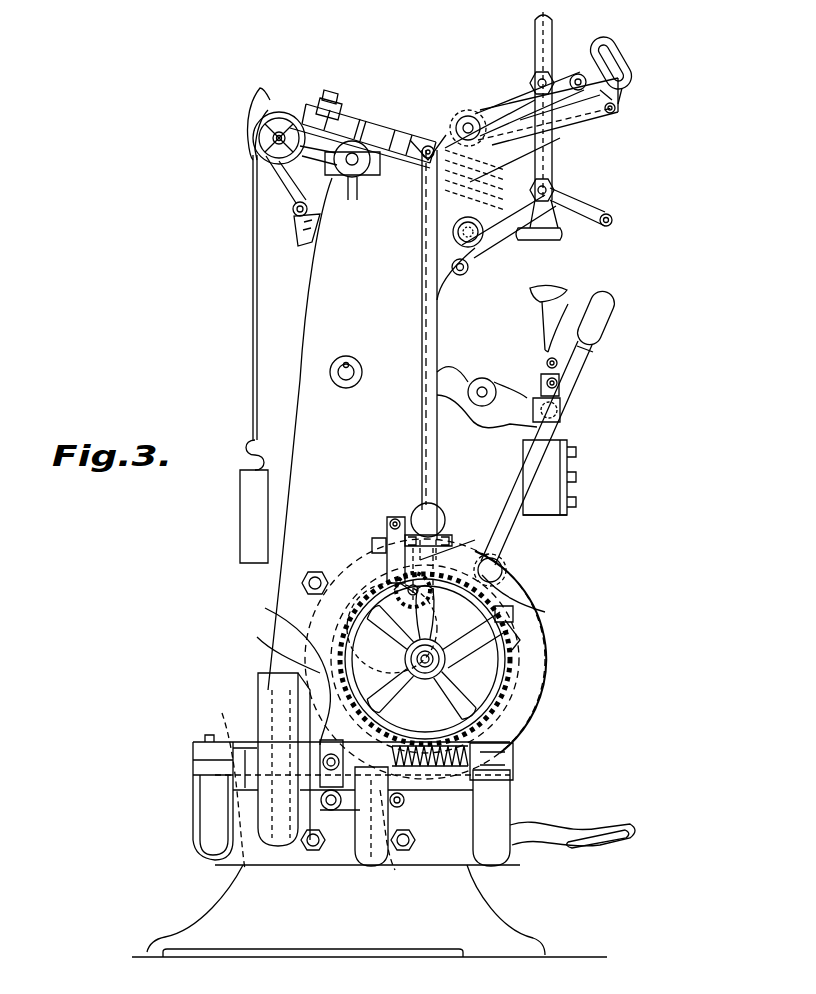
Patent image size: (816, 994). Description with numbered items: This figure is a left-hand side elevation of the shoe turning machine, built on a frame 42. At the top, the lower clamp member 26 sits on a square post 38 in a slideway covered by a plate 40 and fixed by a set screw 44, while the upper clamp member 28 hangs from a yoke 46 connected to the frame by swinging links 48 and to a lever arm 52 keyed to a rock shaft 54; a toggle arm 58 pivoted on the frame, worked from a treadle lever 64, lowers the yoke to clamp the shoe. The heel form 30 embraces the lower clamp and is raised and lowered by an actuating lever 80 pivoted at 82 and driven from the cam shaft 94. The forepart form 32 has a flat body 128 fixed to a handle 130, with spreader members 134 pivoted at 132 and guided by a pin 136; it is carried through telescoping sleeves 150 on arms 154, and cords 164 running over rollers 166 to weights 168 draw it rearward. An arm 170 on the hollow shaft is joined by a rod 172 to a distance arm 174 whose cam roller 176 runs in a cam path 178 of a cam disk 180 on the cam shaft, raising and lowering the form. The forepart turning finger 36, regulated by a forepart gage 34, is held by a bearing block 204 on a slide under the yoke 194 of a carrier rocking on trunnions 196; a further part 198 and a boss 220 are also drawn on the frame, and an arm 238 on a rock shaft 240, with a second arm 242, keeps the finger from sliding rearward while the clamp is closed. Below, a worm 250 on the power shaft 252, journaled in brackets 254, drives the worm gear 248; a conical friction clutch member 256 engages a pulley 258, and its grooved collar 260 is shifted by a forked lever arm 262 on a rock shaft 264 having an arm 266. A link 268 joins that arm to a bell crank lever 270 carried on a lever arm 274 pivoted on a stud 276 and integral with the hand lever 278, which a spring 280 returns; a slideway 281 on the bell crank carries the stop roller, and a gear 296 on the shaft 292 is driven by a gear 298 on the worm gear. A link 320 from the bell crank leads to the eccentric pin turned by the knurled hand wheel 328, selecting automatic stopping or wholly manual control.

The lower clamp member 26 is at (550, 292).
The upper clamp member 28 is at (536, 240).
The heel form 30 is at (552, 334).
The forepart form 32 is at (565, 128).
The forepart gage 34 is at (505, 152).
The forepart turning finger 36 is at (585, 208).
The square post 38 is at (560, 432).
The plate 40 is at (565, 494).
The frame 42 is at (305, 320).
The set screw 44 is at (572, 476).
The yoke 46 is at (548, 150).
The swinging links 48 is at (505, 220).
The lever arm 52 is at (505, 96).
The rock shaft 54 is at (466, 116).
The toggle arm 58 is at (443, 294).
The treadle lever 64 is at (616, 832).
The actuating lever 80 is at (508, 396).
The pivot 82 is at (483, 380).
The cam shaft 94 is at (535, 690).
The body of forepart form 128 is at (560, 142).
The handle 130 is at (630, 62).
The pivot 132 is at (613, 220).
The spreader members 134 is at (616, 108).
The pin 136 is at (620, 94).
The sleeves 150 is at (528, 70).
The arms 154 is at (565, 80).
The cords 164 is at (252, 352).
The rollers 166 is at (283, 110).
The weights 168 is at (238, 515).
The arm 170 is at (440, 140).
The rod 172 is at (421, 272).
The distance arm 174 is at (338, 580).
The cam roller 176 is at (522, 586).
The cam path 178 is at (520, 630).
The cam disk 180 is at (538, 680).
The yoke 194 is at (372, 115).
The trunnions 196 is at (362, 172).
The block 198 is at (342, 100).
The bearing block 204 is at (330, 94).
The boss 220 is at (346, 386).
The arm 238 is at (256, 108).
The rock shaft 240 is at (294, 210).
The second arm 242 is at (300, 232).
The worm gear 248 is at (503, 700).
The worm 250 is at (500, 742).
The power shaft 252 is at (369, 829).
The brackets 254 is at (500, 800).
The friction clutch member 256 is at (270, 644).
The pulley 258 is at (258, 678).
The grooved collar 260 is at (277, 667).
The forked lever arm 262 is at (370, 800).
The rock shaft 264 is at (331, 805).
The arm 266 is at (398, 870).
The link 268 is at (406, 700).
The bell crank lever 270 is at (388, 542).
The lever arm 274 is at (442, 560).
The stud 276 is at (502, 566).
The hand lever 278 is at (586, 376).
The spring 280 is at (548, 612).
The slideway 281 is at (386, 552).
The shaft 292 is at (380, 620).
The gear 296 is at (404, 660).
The gear 298 is at (520, 652).
The link 320 is at (420, 520).
The knurled hand wheel 328 is at (442, 514).